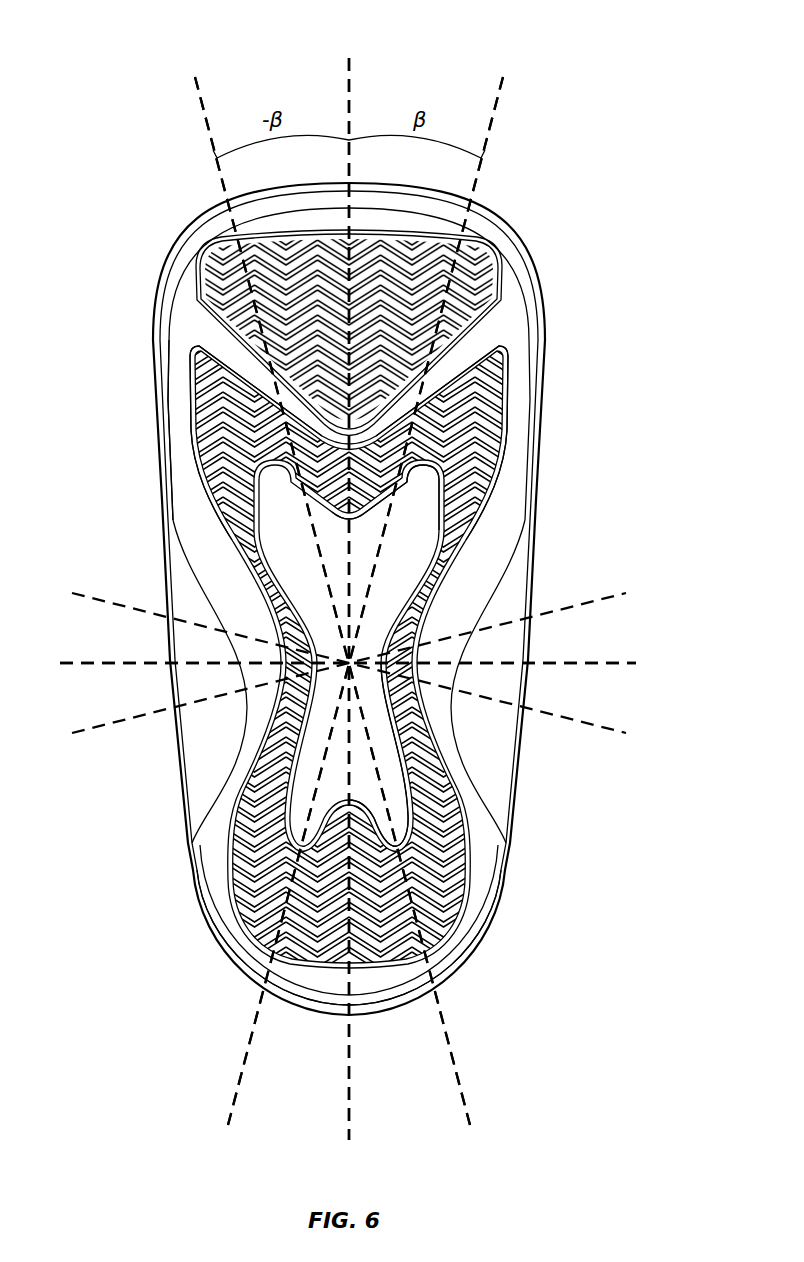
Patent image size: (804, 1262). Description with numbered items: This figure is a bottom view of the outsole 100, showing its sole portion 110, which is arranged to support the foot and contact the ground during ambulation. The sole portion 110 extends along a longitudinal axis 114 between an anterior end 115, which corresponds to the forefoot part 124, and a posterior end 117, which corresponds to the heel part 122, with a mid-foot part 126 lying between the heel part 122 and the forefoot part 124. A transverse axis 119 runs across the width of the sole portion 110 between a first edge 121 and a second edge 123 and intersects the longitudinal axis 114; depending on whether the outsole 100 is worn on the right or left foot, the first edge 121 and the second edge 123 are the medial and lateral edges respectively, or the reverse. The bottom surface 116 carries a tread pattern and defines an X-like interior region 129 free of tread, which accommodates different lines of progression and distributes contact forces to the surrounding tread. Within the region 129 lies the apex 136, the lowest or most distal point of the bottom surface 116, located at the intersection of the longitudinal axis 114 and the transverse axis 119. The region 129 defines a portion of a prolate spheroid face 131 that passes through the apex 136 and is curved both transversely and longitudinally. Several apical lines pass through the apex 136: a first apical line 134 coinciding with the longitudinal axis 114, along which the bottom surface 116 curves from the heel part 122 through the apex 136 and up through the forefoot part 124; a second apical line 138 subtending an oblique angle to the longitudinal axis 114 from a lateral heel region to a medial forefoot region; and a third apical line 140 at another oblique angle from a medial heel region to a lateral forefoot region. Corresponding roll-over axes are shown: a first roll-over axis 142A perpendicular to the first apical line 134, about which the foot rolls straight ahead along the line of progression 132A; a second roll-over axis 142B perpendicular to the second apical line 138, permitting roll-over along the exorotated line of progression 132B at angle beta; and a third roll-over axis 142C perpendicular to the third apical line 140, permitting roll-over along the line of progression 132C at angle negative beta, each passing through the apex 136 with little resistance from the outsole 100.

The outsole 100 is at (688, 267).
The sole portion 110 is at (145, 470).
The longitudinal axis 114 is at (349, 70).
The anterior end 115 is at (502, 247).
The bottom surface 116 is at (508, 543).
The posterior end 117 is at (457, 973).
The transverse axis 119 is at (608, 663).
The first edge 121 is at (538, 393).
The heel part 122 is at (216, 865).
The second edge 123 is at (167, 400).
The forefoot part 124 is at (172, 343).
The mid-foot part 126 is at (212, 582).
The interior region 129 is at (400, 520).
The prolate spheroid face 131 is at (372, 626).
The line of progression 132A is at (349, 70).
The line of progression 132B is at (493, 113).
The line of progression 132C is at (203, 110).
The first apical line 134 is at (349, 70).
The apex 136 is at (393, 700).
The second apical line 138 is at (493, 113).
The third apical line 140 is at (203, 110).
The first roll-over axis 142A is at (608, 663).
The second roll-over axis 142B is at (602, 731).
The third roll-over axis 142C is at (107, 727).